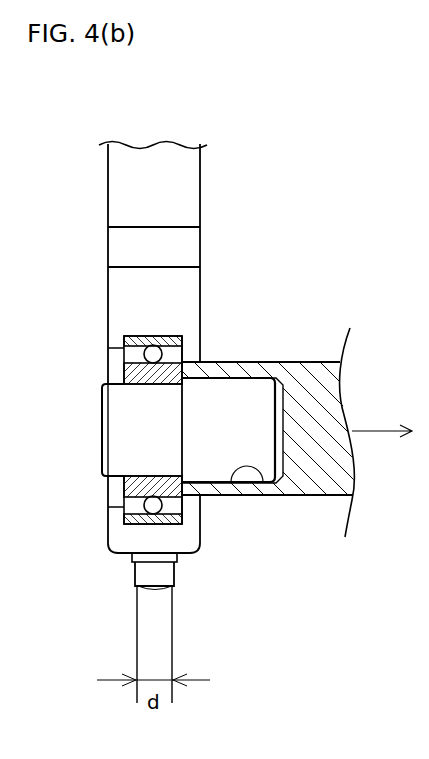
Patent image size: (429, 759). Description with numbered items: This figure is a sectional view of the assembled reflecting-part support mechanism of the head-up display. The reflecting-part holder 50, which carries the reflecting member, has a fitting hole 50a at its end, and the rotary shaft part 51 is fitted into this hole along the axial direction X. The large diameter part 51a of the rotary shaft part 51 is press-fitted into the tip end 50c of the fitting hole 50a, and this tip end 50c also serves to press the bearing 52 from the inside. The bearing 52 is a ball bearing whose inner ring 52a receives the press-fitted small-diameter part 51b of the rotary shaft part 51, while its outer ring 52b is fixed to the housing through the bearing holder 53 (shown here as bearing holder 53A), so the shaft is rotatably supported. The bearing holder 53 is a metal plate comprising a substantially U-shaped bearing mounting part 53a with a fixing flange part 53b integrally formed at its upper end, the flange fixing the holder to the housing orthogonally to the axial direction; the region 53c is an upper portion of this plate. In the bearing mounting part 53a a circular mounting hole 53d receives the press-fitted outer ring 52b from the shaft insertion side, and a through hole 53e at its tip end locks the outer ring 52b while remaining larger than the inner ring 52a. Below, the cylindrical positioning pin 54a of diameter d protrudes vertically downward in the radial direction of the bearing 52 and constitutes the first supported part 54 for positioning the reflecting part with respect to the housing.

The reflecting-part holder 50 is at (313, 490).
The fitting hole 50a is at (263, 483).
The tip end of the fitting hole 50c is at (173, 506).
The rotary shaft part 51 is at (101, 428).
The large diameter part 51a is at (230, 388).
The small-diameter part 51b is at (117, 447).
The bearing 52 is at (120, 332).
The inner ring 52a is at (132, 372).
The outer ring 52b is at (125, 339).
The bearing holder 53 is at (187, 350).
The bearing holder 53A is at (213, 220).
The bearing mounting part 53a is at (205, 287).
The fixing flange part 53b is at (122, 245).
The shaft upper portion 53c is at (122, 172).
The mounting hole 53d is at (108, 503).
The through hole 53e is at (107, 458).
The first supported part 54 is at (143, 575).
The positioning pin 54a is at (154, 644).